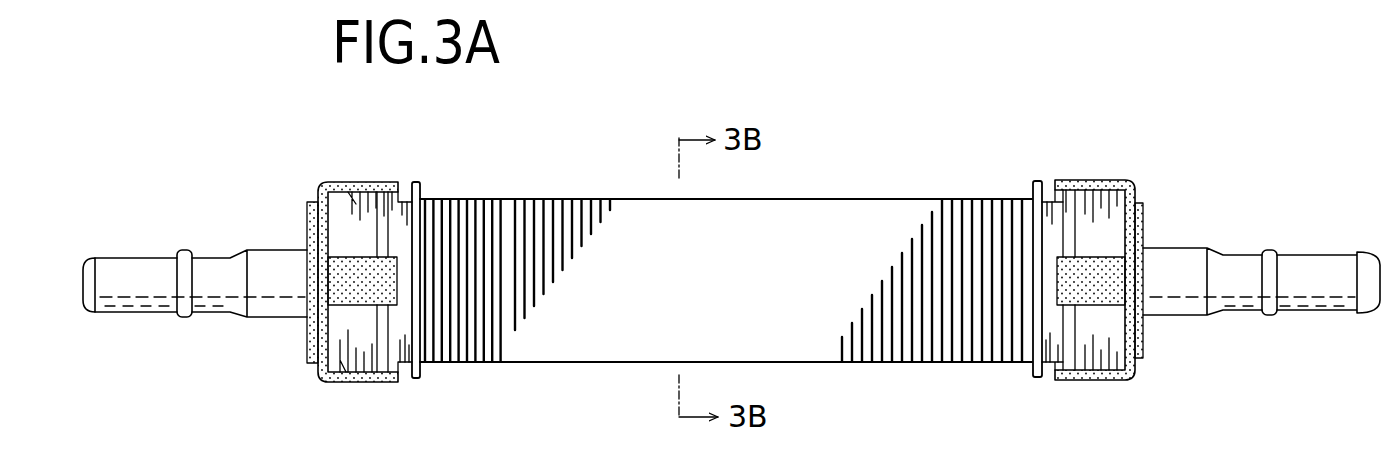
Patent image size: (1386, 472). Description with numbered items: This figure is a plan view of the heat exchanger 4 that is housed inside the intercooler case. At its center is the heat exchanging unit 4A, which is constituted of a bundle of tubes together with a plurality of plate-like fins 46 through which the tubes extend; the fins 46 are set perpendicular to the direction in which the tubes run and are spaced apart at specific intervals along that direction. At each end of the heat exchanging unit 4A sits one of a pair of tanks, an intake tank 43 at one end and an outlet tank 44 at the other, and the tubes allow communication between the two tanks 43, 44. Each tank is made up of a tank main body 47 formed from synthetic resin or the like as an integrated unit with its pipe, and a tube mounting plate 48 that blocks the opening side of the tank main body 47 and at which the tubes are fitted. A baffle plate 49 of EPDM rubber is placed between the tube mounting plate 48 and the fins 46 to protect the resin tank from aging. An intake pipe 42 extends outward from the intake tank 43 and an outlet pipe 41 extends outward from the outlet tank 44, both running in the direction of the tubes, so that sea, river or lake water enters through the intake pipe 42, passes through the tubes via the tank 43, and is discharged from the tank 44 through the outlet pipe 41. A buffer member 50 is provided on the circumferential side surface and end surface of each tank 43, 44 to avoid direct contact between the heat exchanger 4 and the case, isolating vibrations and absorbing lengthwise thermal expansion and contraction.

The heat exchanger 4 is at (870, 168).
The heat exchanging unit 4A is at (630, 212).
The outlet pipe 41 is at (1320, 292).
The intake pipe 42 is at (128, 297).
The intake tank 43 is at (355, 195).
The outlet tank 44 is at (1093, 210).
The fins 46 is at (465, 363).
The tank main body 47 is at (358, 378).
The tube mounting plate 48 is at (397, 372).
The baffle plate 49 is at (416, 181).
The buffer member 50 is at (305, 350).